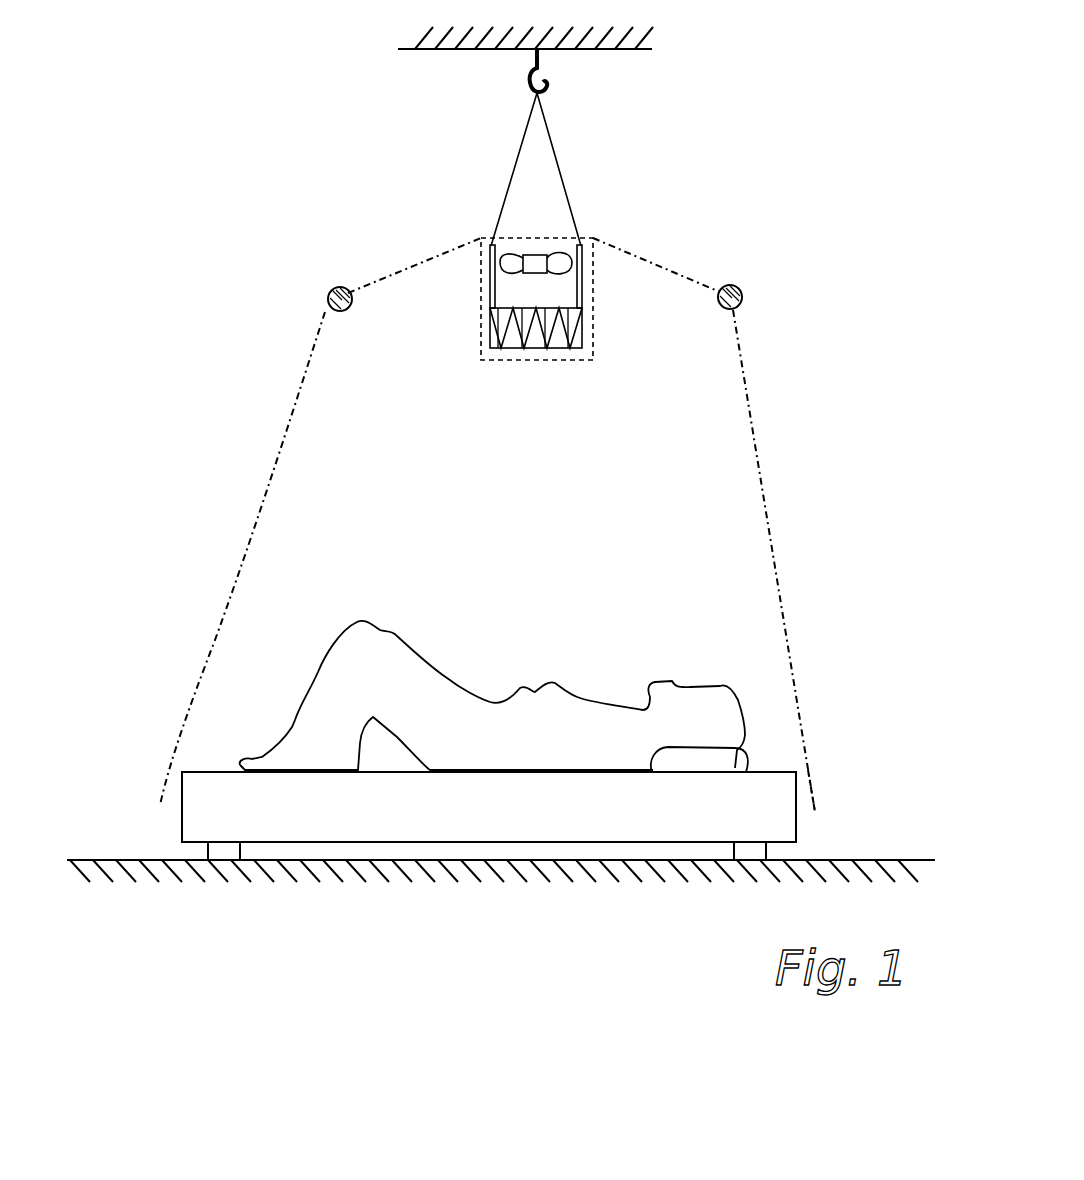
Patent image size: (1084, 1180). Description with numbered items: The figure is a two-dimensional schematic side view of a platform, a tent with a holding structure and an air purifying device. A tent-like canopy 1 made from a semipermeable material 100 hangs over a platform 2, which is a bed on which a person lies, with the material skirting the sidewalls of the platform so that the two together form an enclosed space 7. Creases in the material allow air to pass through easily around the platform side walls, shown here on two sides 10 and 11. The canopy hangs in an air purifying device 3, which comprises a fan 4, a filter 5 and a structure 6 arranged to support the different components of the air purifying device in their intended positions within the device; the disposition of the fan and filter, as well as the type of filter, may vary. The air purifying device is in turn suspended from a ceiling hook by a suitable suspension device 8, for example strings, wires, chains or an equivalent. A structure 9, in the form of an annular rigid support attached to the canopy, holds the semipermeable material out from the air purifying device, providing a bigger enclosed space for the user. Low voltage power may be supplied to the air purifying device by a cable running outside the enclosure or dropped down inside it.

The tent-like canopy 1 is at (423, 272).
The platform 2 is at (453, 780).
The air purifying device 3 is at (478, 355).
The fan 4 is at (535, 273).
The filter 5 is at (548, 335).
The structure 6 is at (583, 287).
The enclosed space 7 is at (520, 540).
The suspension device 8 is at (523, 135).
The structure 9 is at (328, 293).
The side 10 is at (147, 815).
The side 11 is at (832, 813).
The semipermeable material 100 is at (760, 487).